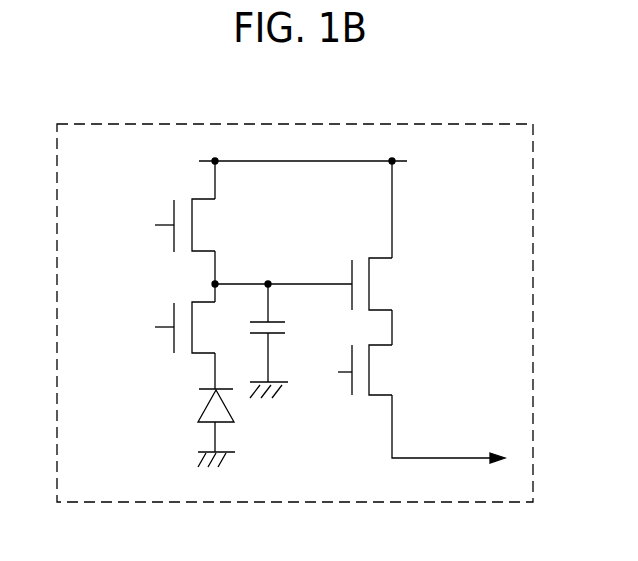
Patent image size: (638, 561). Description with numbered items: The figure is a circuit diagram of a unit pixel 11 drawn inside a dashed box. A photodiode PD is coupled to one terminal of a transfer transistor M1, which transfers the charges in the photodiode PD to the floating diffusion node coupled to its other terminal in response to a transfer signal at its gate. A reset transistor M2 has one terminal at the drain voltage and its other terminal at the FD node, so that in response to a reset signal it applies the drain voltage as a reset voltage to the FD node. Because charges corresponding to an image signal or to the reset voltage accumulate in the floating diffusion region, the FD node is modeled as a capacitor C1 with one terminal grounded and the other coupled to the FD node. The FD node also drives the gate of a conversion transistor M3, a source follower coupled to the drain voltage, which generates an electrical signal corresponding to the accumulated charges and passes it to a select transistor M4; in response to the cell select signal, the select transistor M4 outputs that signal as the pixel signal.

The unit pixel 11 is at (492, 123).
The transfer transistor M1 is at (204, 327).
The reset transistor M2 is at (204, 225).
The conversion transistor M3 is at (382, 284).
The select transistor M4 is at (382, 370).
The capacitor C1 is at (281, 341).
The photodiode PD is at (202, 428).